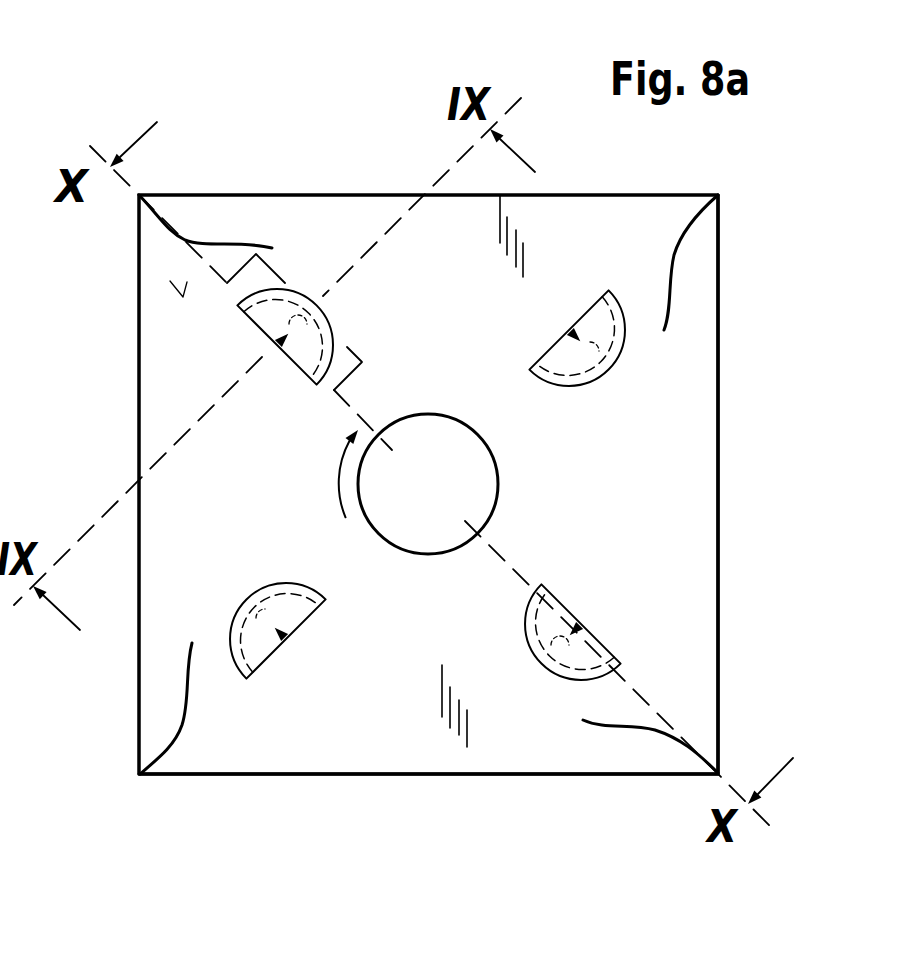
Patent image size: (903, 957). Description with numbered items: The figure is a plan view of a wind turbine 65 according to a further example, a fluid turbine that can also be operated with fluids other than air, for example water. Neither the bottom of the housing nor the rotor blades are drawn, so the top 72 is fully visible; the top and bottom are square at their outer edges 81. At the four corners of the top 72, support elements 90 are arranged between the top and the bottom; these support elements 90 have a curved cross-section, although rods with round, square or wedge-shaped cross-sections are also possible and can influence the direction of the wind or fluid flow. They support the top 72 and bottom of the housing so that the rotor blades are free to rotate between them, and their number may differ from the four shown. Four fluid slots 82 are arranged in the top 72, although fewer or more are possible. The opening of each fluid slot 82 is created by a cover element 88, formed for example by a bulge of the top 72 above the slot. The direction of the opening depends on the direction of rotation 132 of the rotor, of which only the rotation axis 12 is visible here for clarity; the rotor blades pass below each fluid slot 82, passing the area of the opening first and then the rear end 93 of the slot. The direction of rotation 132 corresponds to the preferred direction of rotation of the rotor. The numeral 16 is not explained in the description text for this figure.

The rotation axis 12 is at (420, 556).
The central opening 16 is at (530, 471).
The wind turbine 65 is at (788, 368).
The top 72 is at (170, 281).
The outer edges 81 is at (720, 562).
The fluid slots 82 is at (285, 355).
The cover element 88 is at (250, 314).
The support elements 90 is at (237, 243).
The rear end 93 is at (303, 325).
The direction of rotation 132 is at (340, 490).